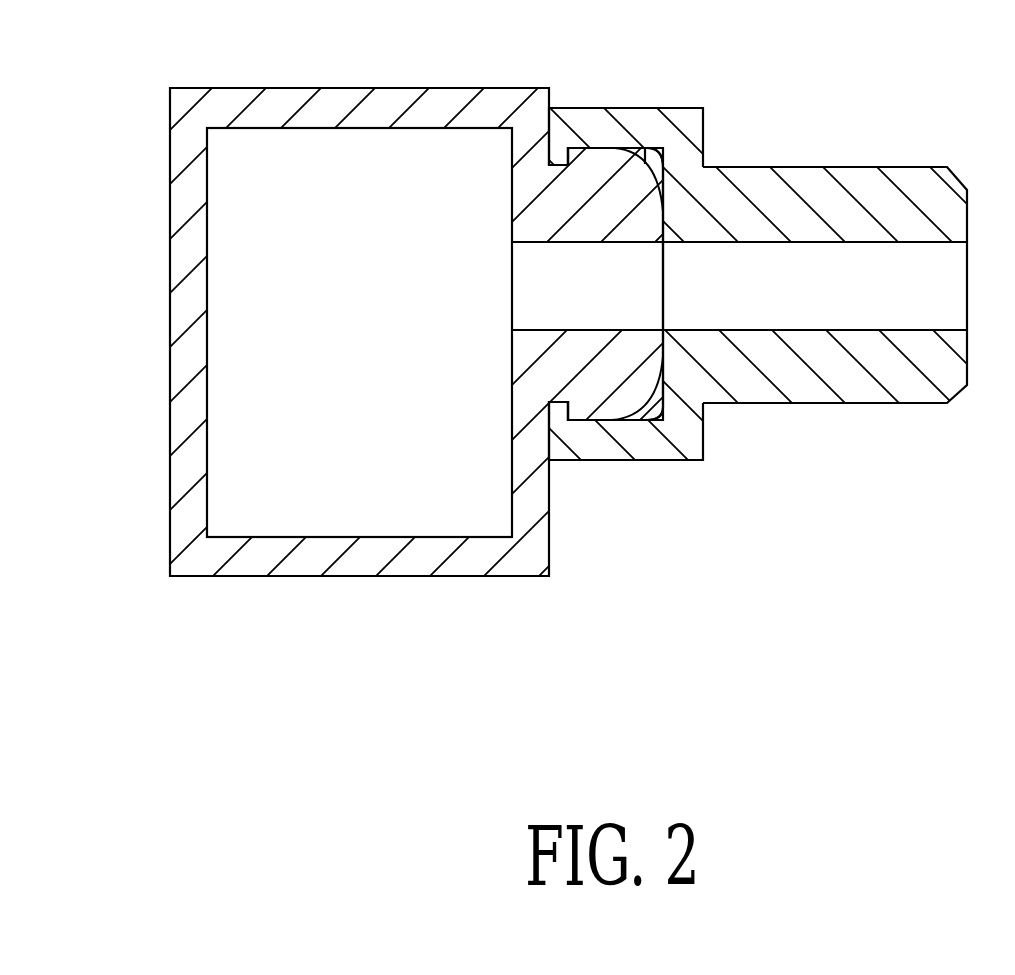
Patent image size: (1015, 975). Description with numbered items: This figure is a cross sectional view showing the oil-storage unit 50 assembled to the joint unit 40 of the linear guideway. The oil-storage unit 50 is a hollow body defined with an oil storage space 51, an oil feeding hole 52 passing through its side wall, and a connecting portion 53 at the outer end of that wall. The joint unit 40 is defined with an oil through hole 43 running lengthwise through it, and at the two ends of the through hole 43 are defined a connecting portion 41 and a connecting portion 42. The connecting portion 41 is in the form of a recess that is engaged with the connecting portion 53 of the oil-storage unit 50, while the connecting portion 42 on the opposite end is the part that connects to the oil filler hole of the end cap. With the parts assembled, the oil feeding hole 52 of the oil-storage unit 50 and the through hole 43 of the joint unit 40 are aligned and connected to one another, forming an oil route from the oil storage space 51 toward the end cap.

The joint unit 40 is at (705, 130).
The connecting portion 41 is at (645, 148).
The connecting portion 42 is at (888, 208).
The oil through hole 43 is at (867, 303).
The oil-storage unit 50 is at (550, 548).
The oil storage space 51 is at (278, 405).
The oil feeding hole 52 is at (537, 293).
The connecting portion 53 is at (602, 380).